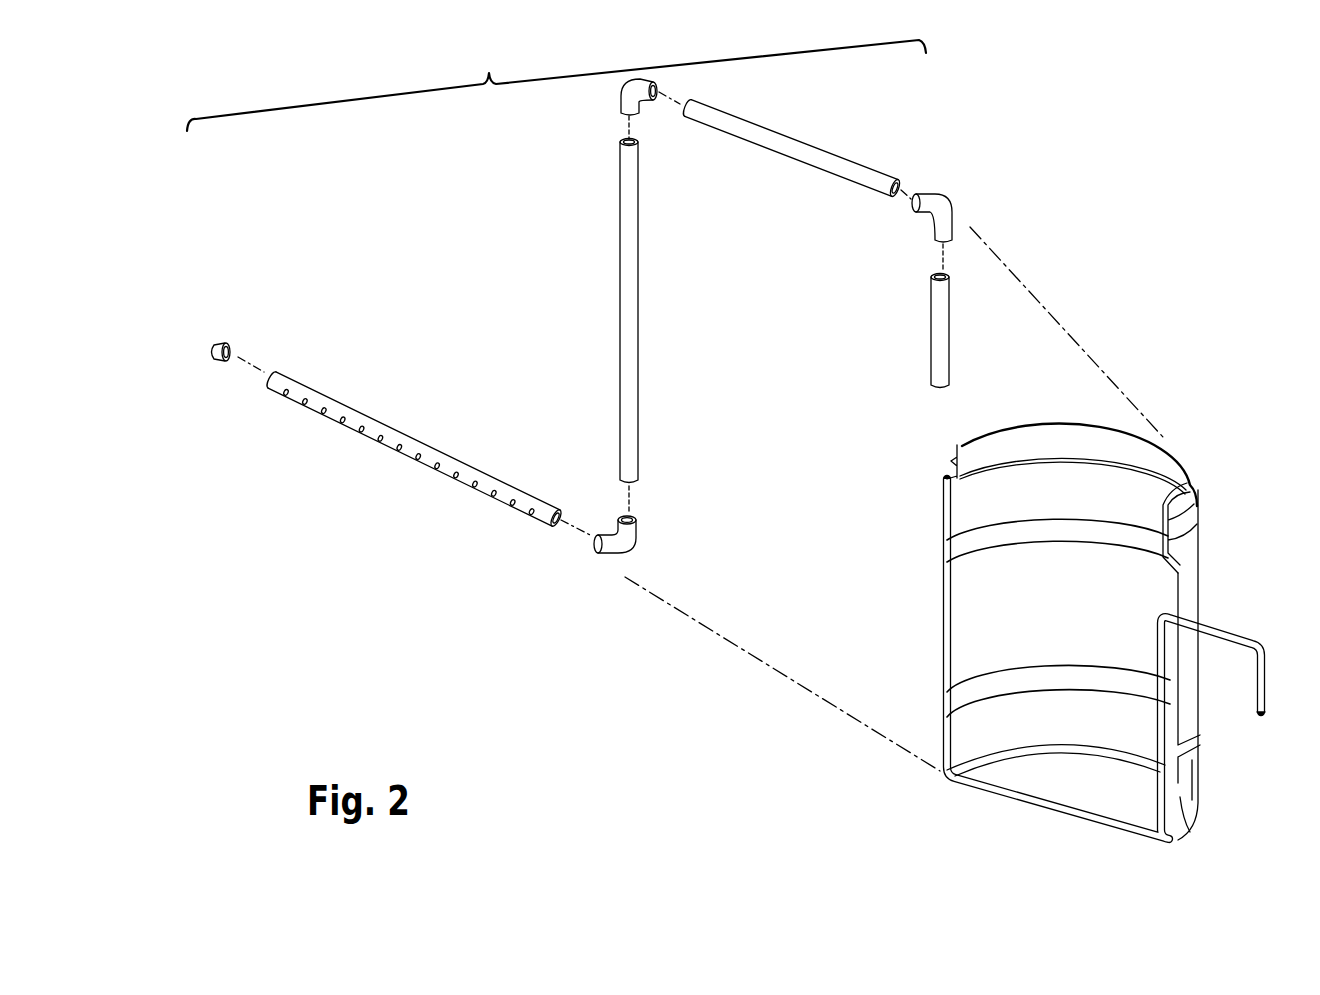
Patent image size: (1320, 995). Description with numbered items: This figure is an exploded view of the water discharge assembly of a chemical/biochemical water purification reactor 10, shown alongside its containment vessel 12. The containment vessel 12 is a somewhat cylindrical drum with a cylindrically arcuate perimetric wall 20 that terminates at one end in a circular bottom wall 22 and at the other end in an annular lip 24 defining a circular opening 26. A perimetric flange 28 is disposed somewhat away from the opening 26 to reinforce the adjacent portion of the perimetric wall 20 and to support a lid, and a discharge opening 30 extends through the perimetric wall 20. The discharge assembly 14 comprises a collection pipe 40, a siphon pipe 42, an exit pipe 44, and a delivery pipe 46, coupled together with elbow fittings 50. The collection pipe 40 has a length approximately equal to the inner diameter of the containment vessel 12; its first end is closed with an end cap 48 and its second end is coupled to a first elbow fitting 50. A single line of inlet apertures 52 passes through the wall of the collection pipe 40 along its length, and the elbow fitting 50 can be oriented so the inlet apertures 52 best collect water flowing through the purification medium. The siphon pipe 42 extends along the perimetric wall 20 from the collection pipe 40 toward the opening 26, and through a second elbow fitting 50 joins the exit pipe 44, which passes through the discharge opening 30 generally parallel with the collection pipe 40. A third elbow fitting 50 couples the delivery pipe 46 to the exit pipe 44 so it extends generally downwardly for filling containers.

The water purification reactor 10 is at (1147, 186).
The containment vessel 12 is at (1192, 484).
The discharge assembly 14 is at (1242, 626).
The perimetric wall 20 is at (1192, 790).
The bottom wall 22 is at (1065, 815).
The annular lip 24 is at (1032, 442).
The opening 26 is at (958, 458).
The perimetric flange 28 is at (1198, 496).
The discharge opening 30 is at (1198, 622).
The collection pipe 40 is at (353, 410).
The siphon pipe 42 is at (623, 248).
The exit pipe 44 is at (813, 148).
The delivery pipe 46 is at (937, 320).
The end cap 48 is at (226, 341).
The elbow fitting 50 is at (618, 97).
The inlet apertures 52 is at (320, 408).